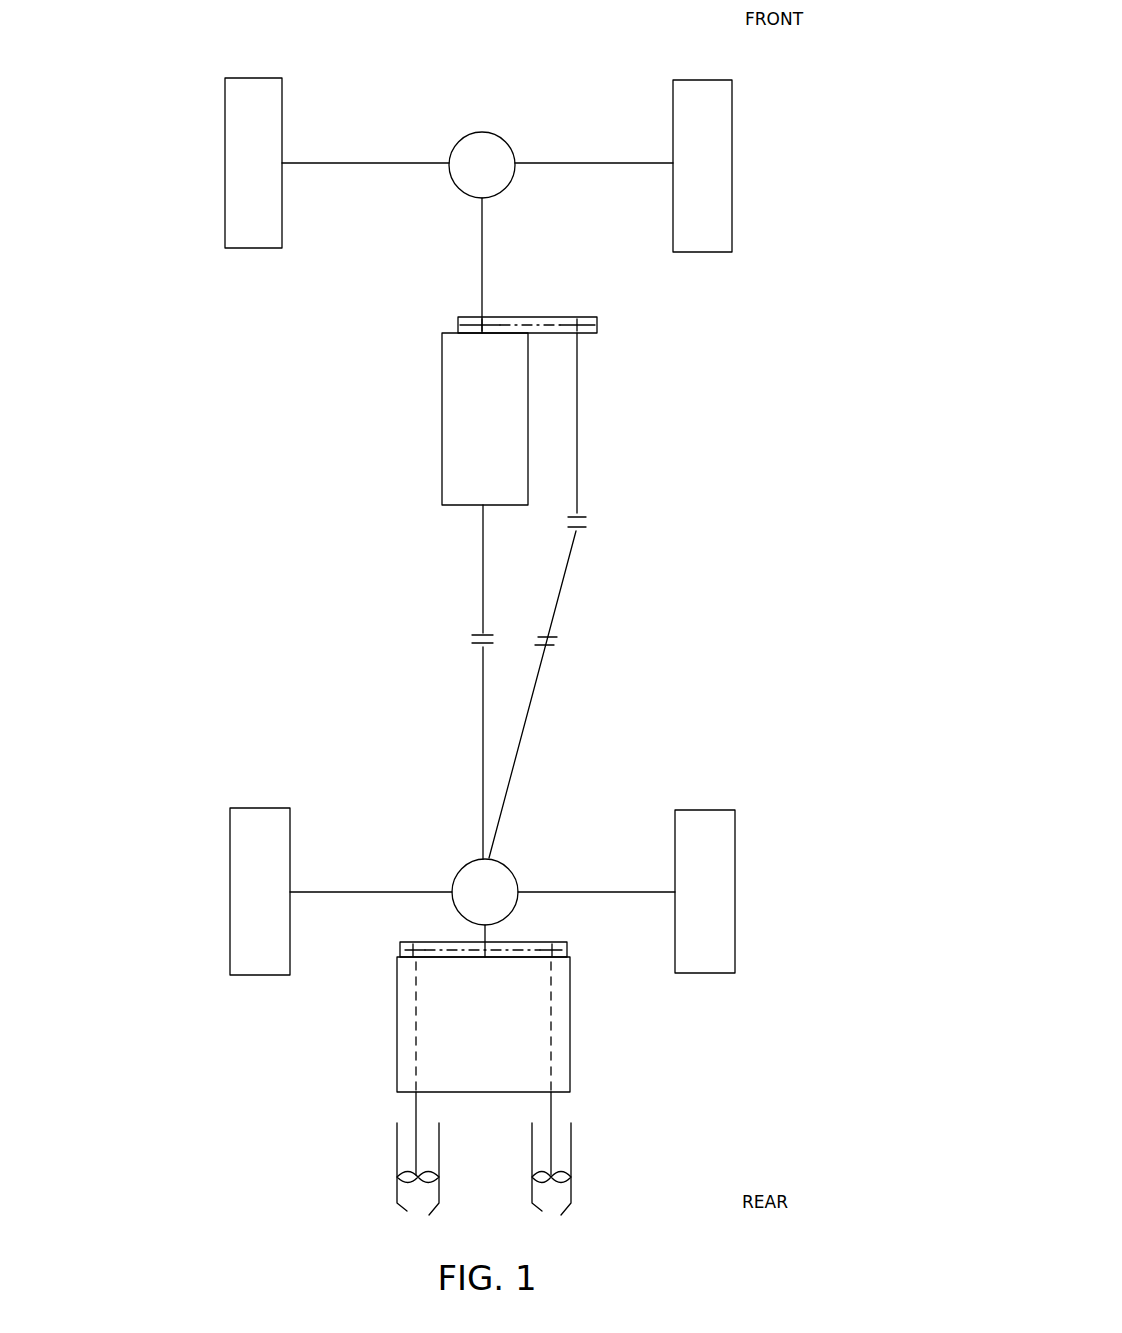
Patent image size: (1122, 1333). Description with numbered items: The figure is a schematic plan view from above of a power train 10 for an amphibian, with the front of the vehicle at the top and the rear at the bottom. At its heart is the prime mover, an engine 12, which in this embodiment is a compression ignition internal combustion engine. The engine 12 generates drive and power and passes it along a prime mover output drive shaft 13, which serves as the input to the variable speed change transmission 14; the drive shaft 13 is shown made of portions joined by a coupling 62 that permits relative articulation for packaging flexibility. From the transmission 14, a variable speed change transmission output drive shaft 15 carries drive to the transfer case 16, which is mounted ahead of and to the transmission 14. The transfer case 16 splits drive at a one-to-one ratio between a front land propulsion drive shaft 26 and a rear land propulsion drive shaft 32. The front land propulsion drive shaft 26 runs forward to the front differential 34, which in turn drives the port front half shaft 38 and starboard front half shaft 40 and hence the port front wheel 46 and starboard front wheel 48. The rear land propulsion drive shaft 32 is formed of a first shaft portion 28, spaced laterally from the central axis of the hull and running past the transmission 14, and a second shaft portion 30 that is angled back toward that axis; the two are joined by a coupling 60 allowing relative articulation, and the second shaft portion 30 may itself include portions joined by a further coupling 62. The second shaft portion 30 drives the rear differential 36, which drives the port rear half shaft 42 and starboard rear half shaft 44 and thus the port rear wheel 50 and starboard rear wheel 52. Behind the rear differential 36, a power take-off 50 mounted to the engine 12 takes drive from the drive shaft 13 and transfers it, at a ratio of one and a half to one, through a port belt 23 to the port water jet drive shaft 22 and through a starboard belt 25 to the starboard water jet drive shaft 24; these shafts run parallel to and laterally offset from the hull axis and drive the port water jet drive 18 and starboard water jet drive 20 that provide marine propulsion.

The power train 10 is at (210, 641).
The engine 12 is at (468, 1042).
The prime mover output drive shaft 13 is at (478, 553).
The variable speed change transmission 14 is at (493, 425).
The variable speed change transmission output drive shaft 15 is at (476, 327).
The transfer case 16 is at (598, 323).
The port water jet drive 18 is at (392, 1197).
The starboard water jet drive 20 is at (575, 1194).
The port water jet drive shaft 22 is at (411, 1110).
The port belt 23 is at (447, 948).
The starboard water jet drive shaft 24 is at (553, 1110).
The starboard belt 25 is at (520, 948).
The front land propulsion drive shaft 26 is at (484, 262).
The first shaft portion 28 is at (580, 433).
The second shaft portion 30 is at (533, 703).
The rear land propulsion drive shaft 32 is at (586, 578).
The front differential 34 is at (505, 137).
The rear differential 36 is at (515, 870).
The port front half shaft 38 is at (355, 166).
The starboard front half shaft 40 is at (620, 167).
The port rear half shaft 42 is at (337, 895).
The starboard rear half shaft 44 is at (630, 895).
The port front wheel 46 is at (266, 175).
The starboard front wheel 48 is at (715, 175).
The power take-off 50 is at (271, 905).
The starboard rear wheel 52 is at (718, 904).
The coupling 60 is at (598, 519).
The coupling 62 is at (528, 652).